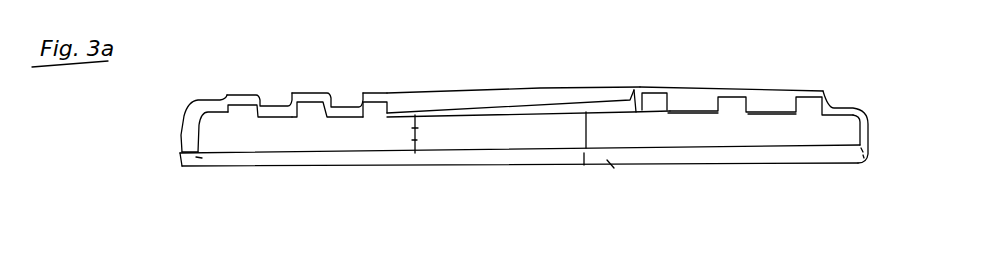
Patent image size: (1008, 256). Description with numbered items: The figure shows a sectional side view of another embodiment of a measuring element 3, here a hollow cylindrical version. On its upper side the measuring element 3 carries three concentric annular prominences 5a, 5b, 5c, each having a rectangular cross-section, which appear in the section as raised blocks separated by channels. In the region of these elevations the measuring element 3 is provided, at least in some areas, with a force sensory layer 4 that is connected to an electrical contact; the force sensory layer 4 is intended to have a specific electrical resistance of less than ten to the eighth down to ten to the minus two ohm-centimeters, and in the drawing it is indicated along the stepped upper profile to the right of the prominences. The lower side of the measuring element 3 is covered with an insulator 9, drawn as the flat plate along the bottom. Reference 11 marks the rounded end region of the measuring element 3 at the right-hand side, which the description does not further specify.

The measuring element 3 is at (652, 197).
The force sensory layer 4 is at (680, 100).
The annular prominence 5a is at (238, 93).
The annular prominence 5b is at (315, 93).
The annular prominence 5c is at (385, 93).
The insulator 9 is at (482, 163).
The end wall 11 is at (858, 135).